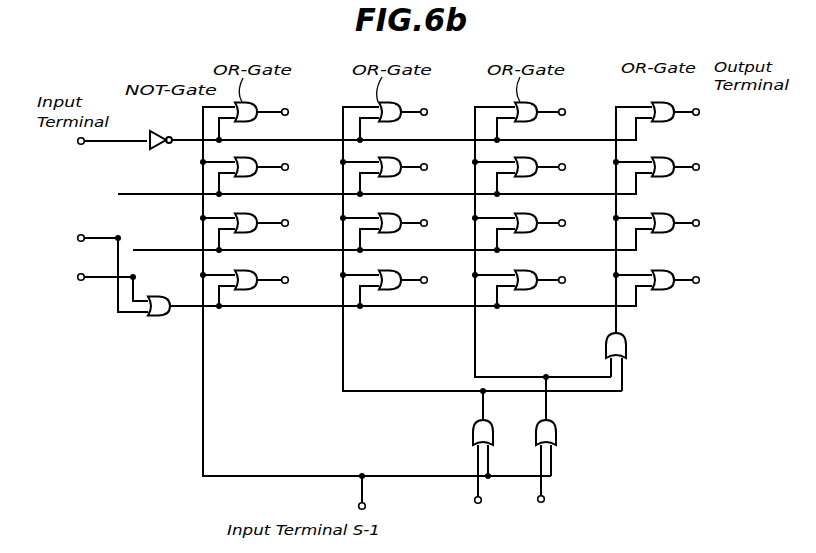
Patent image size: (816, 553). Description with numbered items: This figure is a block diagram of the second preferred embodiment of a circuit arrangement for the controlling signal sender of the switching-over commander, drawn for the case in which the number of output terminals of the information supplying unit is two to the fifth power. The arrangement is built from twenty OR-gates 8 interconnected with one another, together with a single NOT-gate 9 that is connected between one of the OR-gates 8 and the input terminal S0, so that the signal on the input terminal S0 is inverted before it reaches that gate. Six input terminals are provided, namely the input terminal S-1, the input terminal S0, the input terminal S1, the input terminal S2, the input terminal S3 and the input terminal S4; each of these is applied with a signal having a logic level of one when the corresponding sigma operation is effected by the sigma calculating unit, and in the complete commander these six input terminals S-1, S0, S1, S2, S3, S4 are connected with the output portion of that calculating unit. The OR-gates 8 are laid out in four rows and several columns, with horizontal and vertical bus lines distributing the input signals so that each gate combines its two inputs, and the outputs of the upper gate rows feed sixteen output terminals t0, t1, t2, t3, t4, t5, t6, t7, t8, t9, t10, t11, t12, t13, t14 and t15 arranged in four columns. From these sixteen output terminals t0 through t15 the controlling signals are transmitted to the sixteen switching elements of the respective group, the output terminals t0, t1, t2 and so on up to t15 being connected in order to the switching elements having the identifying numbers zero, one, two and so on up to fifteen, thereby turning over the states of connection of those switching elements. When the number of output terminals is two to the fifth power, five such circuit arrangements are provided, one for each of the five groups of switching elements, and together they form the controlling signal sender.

The OR-gate 8 is at (250, 103).
The NOT-gate 9 is at (160, 134).
The input terminal S0 is at (95, 151).
The input terminal S1 is at (476, 491).
The input terminal S2 is at (539, 491).
The input terminal S3 is at (78, 236).
The input terminal S4 is at (89, 280).
The input terminal S-1 is at (362, 492).
The output terminal t0 is at (283, 115).
The output terminal t1 is at (425, 114).
The output terminal t2 is at (562, 112).
The output terminal t3 is at (698, 115).
The output terminal t4 is at (283, 171).
The output terminal t5 is at (425, 170).
The output terminal t6 is at (564, 170).
The output terminal t7 is at (698, 170).
The output terminal t8 is at (283, 227).
The output terminal t9 is at (425, 226).
The output terminal t10 is at (567, 225).
The output terminal t11 is at (703, 225).
The output terminal t12 is at (288, 285).
The output terminal t13 is at (430, 284).
The output terminal t14 is at (569, 285).
The output terminal t15 is at (703, 285).